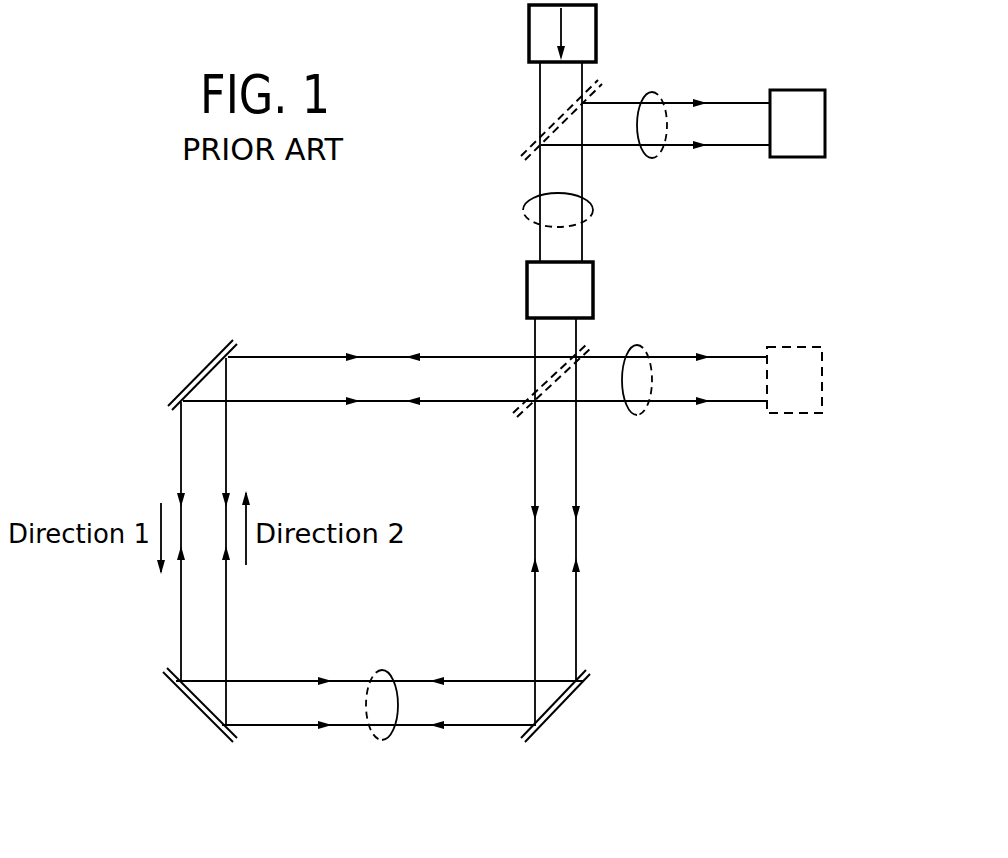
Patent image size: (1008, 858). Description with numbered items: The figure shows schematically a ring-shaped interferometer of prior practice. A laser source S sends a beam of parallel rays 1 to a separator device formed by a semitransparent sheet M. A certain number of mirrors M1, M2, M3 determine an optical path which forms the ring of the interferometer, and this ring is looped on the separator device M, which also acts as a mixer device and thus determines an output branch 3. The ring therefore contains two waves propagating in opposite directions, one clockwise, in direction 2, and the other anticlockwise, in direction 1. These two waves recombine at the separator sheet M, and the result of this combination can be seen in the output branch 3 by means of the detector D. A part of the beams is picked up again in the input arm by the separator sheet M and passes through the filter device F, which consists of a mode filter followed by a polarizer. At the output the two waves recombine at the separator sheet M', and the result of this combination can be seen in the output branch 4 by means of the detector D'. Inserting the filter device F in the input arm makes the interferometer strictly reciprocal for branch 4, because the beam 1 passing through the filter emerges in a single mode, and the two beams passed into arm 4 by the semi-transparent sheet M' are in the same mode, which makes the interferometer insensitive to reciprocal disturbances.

The laser source S is at (596, 28).
The filter device F is at (593, 285).
The separator sheet M' is at (546, 136).
The semitransparent sheet M is at (539, 400).
The mirror M1 is at (543, 724).
The mirror M2 is at (198, 716).
The mirror M3 is at (203, 372).
The beam of parallel rays 1 is at (613, 187).
The direction 2 is at (385, 740).
The output branch 3 is at (640, 415).
The output branch 4 is at (658, 157).
The detector D is at (807, 417).
The detector D' is at (813, 163).